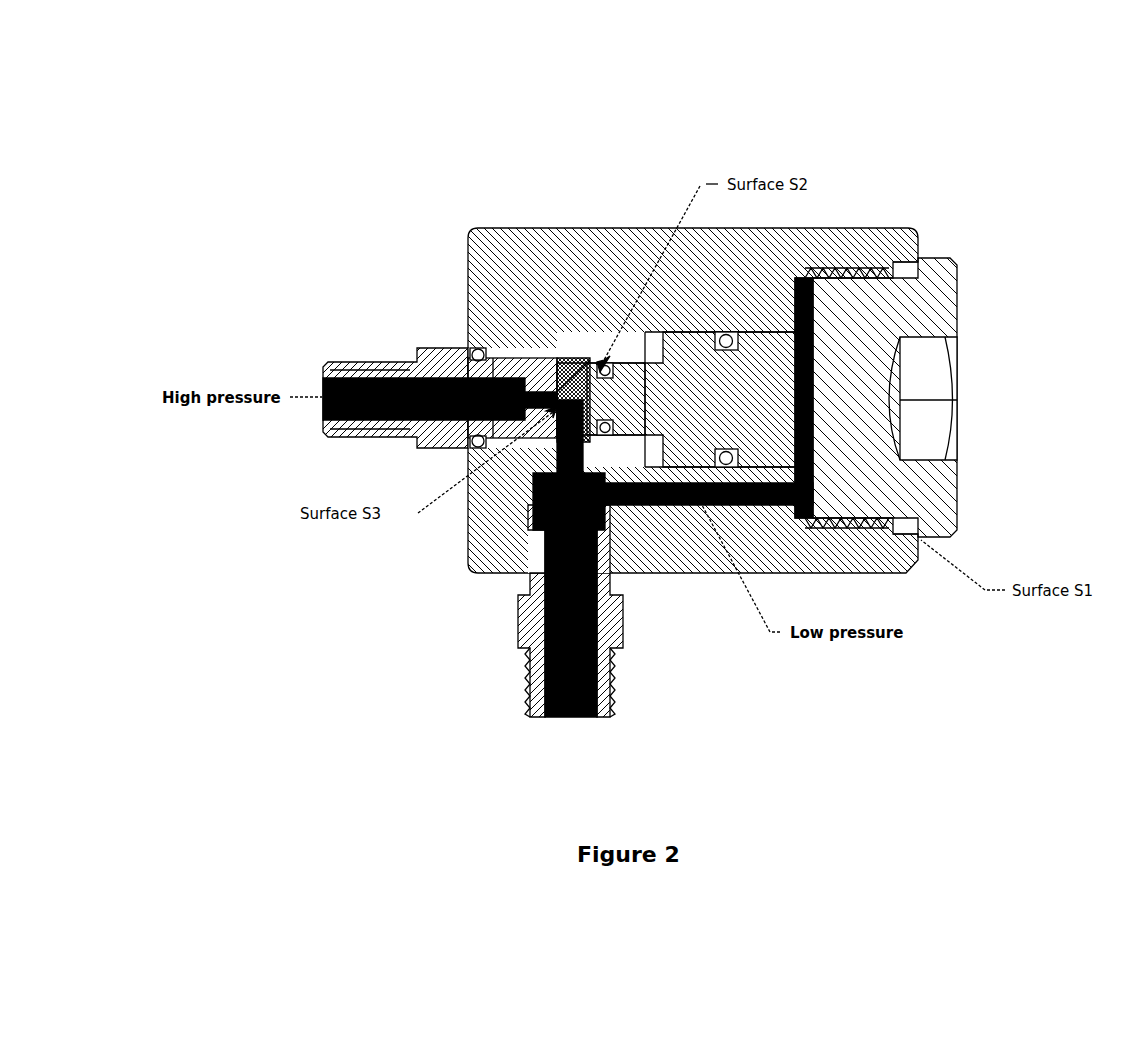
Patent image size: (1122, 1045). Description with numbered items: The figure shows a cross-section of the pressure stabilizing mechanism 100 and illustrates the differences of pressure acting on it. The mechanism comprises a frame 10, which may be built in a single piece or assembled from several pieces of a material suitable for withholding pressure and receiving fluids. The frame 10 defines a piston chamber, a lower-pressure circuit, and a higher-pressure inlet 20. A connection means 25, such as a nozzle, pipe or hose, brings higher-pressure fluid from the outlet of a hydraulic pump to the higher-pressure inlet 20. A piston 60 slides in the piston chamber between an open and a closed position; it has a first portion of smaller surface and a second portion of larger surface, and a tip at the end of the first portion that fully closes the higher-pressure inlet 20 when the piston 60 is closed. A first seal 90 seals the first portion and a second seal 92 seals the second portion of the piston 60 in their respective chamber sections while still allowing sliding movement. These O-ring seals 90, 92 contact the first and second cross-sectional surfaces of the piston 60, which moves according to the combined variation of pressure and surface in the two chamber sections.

The pressure stabilizing mechanism 100 is at (216, 120).
The frame 10 is at (517, 228).
The higher-pressure inlet 20 is at (570, 358).
The connection means 25 is at (378, 355).
The piston 60 is at (815, 322).
The first seal 90 is at (727, 344).
The second seal 92 is at (607, 376).